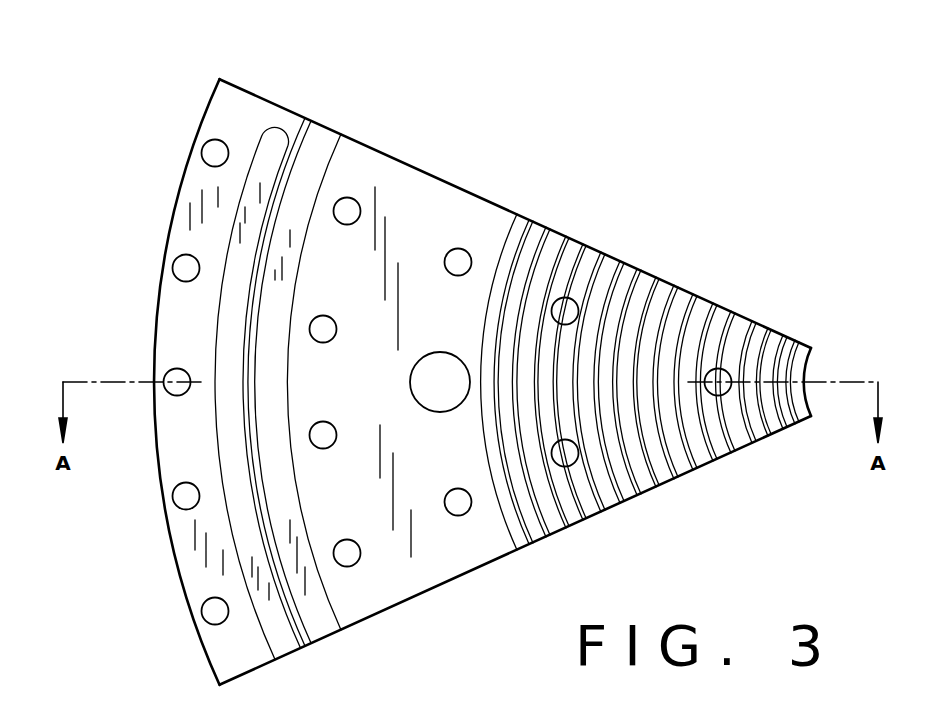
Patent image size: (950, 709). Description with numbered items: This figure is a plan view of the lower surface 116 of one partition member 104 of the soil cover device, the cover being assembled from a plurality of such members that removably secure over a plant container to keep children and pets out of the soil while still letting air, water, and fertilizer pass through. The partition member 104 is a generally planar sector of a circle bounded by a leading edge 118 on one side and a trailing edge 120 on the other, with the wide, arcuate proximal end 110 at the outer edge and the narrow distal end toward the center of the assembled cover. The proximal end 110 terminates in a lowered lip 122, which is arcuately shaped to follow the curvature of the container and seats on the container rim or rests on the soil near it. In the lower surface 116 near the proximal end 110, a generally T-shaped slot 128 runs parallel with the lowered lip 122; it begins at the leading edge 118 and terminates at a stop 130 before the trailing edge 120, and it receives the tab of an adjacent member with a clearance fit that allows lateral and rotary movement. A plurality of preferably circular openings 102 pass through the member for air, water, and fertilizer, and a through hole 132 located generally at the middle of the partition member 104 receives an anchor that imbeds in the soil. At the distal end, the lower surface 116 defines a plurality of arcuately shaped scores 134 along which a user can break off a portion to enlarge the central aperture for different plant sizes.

The openings 102 is at (462, 249).
The partition member 104 is at (422, 195).
The proximal end 110 is at (178, 452).
The lower surface 116 is at (380, 379).
The leading edge 118 is at (422, 594).
The trailing edge 120 is at (360, 143).
The lowered lip 122 is at (154, 342).
The slot 128 is at (222, 322).
The stop 130 is at (280, 128).
The through hole 132 is at (466, 335).
The scores 134 is at (705, 318).